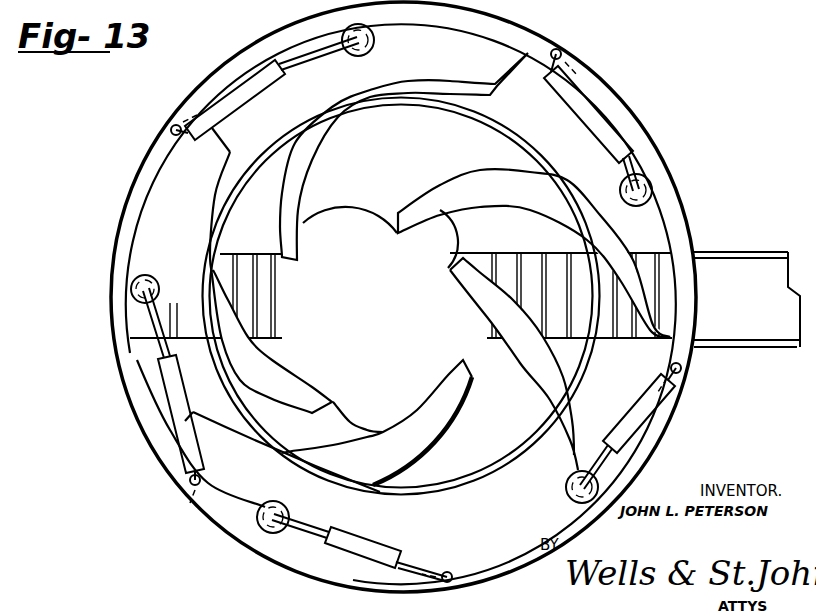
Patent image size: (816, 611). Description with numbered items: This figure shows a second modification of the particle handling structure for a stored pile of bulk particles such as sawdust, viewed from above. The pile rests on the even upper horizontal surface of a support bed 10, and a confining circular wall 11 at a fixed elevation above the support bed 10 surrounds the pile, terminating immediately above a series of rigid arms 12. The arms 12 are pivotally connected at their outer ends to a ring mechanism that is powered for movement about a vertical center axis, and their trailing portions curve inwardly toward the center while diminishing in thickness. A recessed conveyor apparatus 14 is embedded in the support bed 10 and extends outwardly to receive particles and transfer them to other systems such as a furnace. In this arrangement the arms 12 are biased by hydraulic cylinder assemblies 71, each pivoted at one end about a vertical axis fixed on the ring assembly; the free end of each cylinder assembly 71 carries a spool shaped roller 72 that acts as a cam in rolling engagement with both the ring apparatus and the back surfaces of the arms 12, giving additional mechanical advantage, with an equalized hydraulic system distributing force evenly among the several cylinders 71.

The support bed 10 is at (420, 159).
The confining circular wall 11 is at (498, 124).
The rigid arms 12 is at (228, 186).
The recessed conveyor apparatus 14 is at (508, 262).
The hydraulic cylinder assemblies 71 is at (262, 92).
The spool shaped roller 72 is at (342, 54).